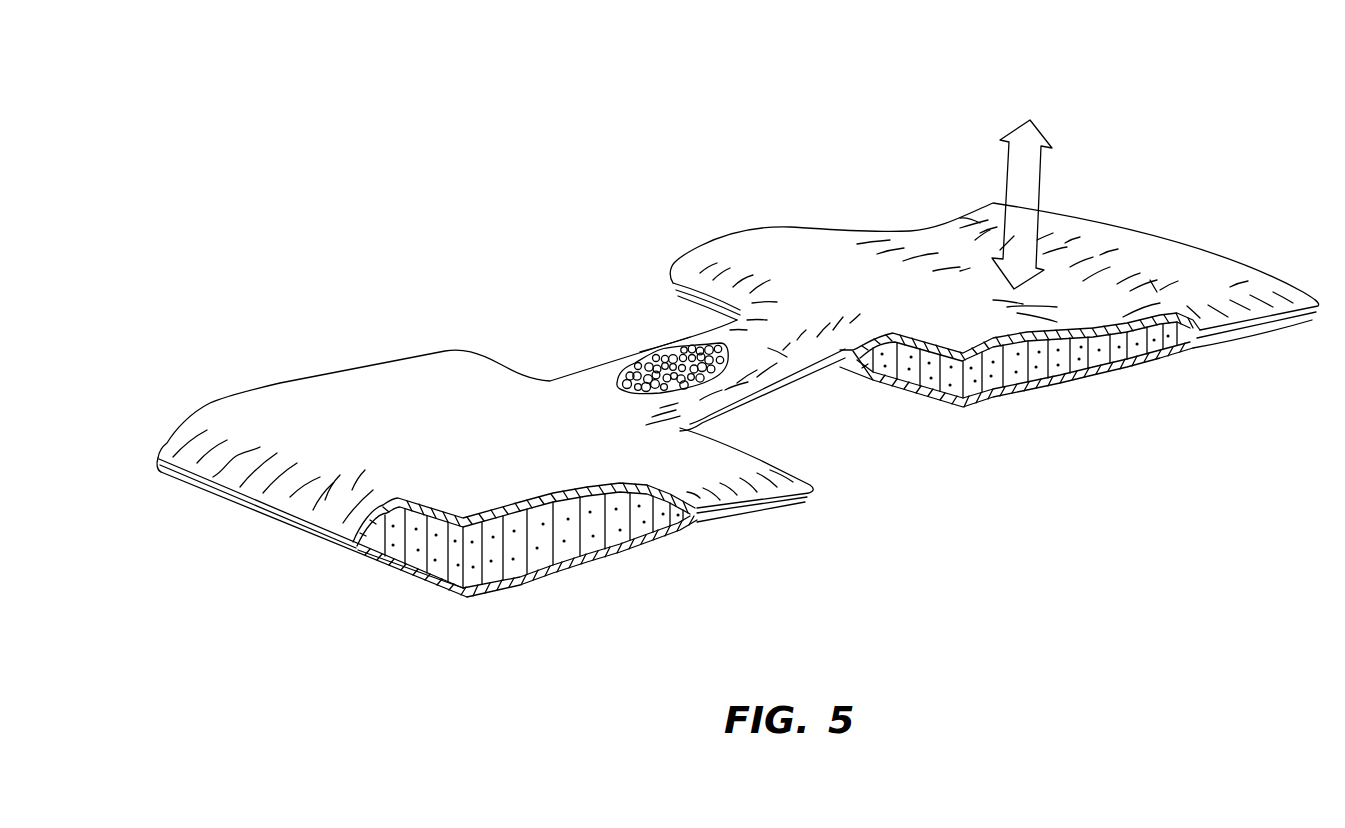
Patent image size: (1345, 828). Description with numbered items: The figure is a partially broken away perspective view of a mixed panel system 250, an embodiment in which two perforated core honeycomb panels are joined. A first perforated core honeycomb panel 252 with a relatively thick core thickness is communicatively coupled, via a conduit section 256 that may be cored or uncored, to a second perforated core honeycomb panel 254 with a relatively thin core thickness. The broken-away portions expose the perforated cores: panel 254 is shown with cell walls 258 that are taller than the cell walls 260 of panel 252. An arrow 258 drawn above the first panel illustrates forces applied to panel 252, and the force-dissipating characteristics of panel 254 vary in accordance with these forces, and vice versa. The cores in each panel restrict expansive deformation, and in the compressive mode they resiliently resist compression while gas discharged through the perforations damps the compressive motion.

The mixed panel system 250 is at (568, 192).
The first perforated core honeycomb panel 252 is at (1166, 412).
The second perforated core honeycomb panel 254 is at (624, 600).
The conduit section 256 is at (728, 390).
The cell walls 258 is at (478, 588).
The cell walls 260 is at (1013, 382).